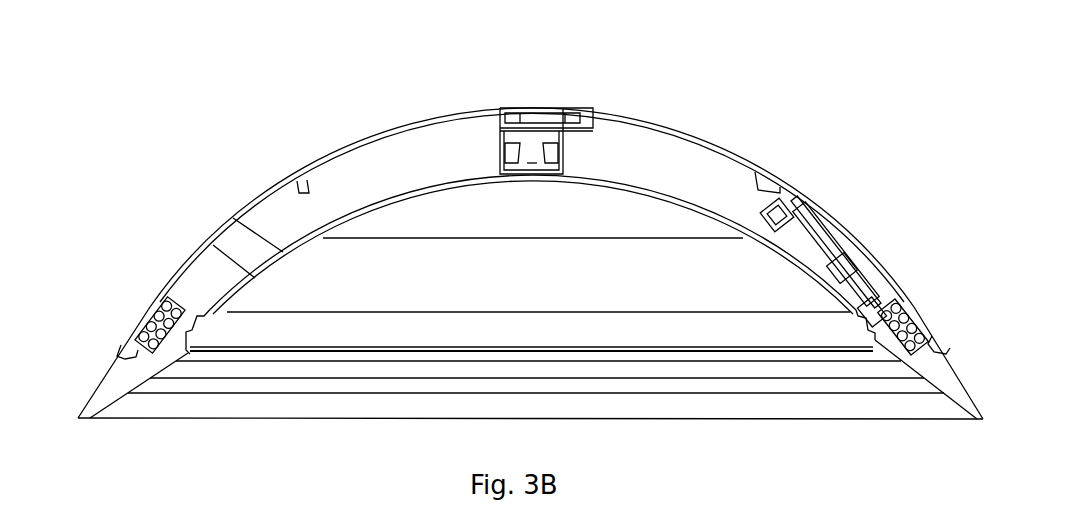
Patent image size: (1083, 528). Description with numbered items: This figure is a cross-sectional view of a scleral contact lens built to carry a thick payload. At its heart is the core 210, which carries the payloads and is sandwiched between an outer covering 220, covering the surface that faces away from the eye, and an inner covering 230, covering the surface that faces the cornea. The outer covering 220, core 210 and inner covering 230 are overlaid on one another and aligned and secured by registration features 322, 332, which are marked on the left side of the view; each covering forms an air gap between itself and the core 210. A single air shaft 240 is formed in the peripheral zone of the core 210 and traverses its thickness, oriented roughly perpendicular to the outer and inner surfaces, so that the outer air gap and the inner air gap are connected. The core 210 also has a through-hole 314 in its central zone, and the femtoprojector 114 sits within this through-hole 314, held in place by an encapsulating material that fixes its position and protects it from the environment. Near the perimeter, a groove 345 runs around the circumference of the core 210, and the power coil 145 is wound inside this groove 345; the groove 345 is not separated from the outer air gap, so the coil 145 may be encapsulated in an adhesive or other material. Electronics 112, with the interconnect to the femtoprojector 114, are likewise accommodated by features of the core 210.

The electronics 112 is at (797, 237).
The femtoprojector 114 is at (540, 110).
The coil 145 is at (900, 313).
The core 210 is at (415, 175).
The outer covering 220 is at (227, 227).
The inner covering 230 is at (260, 285).
The air shaft 240 is at (243, 250).
The through-hole 314 is at (500, 138).
The registration feature 322 is at (298, 178).
The registration feature 332 is at (203, 330).
The groove 345 is at (897, 337).